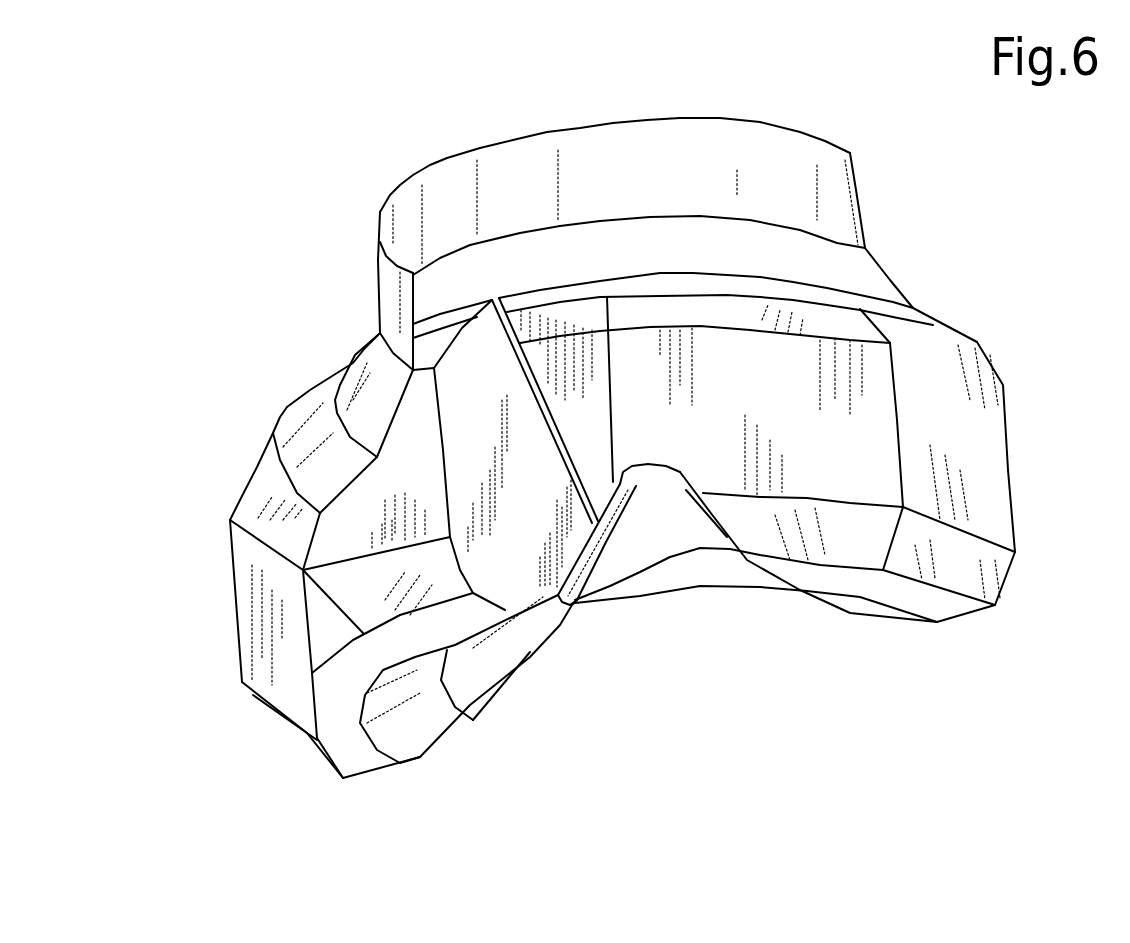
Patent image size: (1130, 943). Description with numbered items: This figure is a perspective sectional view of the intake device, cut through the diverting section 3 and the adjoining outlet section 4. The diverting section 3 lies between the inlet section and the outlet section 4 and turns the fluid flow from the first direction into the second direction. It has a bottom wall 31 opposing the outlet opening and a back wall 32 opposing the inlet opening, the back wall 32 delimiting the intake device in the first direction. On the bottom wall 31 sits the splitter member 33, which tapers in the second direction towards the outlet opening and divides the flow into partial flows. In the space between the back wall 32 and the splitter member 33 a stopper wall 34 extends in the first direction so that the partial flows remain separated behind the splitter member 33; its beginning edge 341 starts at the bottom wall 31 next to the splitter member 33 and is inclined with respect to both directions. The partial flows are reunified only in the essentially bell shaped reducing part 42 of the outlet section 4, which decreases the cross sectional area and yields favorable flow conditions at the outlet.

The diverting section 3 is at (262, 744).
The outlet section 4 is at (912, 286).
The bottom wall 31 is at (363, 753).
The back wall 32 is at (587, 368).
The splitter member 33 is at (582, 600).
The stopper wall 34 is at (455, 470).
The beginning edge 341 is at (508, 318).
The reducing part 42 is at (360, 362).